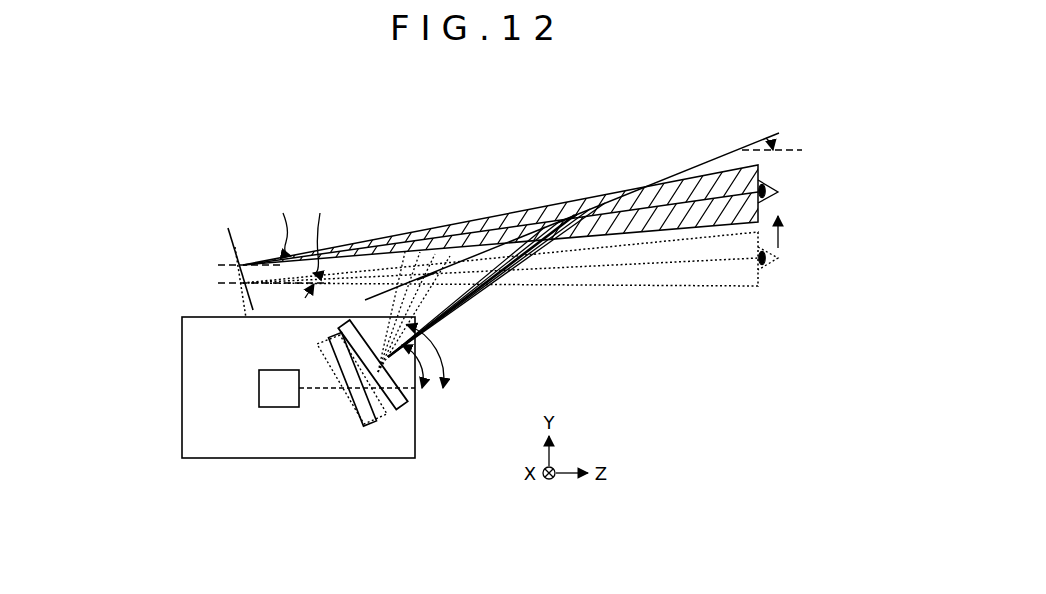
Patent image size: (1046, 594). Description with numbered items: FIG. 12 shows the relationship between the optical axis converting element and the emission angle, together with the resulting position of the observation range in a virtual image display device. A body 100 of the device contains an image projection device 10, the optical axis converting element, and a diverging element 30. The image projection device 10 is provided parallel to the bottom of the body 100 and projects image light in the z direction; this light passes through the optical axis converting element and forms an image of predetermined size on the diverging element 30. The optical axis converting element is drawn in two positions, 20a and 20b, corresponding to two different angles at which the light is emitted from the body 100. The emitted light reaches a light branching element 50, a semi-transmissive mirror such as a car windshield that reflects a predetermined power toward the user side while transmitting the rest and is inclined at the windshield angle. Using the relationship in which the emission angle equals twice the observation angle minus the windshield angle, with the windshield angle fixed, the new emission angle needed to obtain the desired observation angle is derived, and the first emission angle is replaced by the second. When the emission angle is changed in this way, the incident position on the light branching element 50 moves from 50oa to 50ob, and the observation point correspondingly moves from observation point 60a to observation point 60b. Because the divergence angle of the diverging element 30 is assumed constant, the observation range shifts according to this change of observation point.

The body 100 is at (196, 351).
The image projection device 10 is at (267, 397).
The optical axis converting element 20a is at (318, 344).
The optical axis converting element 20b is at (366, 418).
The diverging element 30 is at (404, 395).
The light branching element 50 is at (680, 172).
The incident position 50oa is at (427, 278).
The incident position 50ob is at (567, 220).
The observation point 60a is at (778, 258).
The observation point 60b is at (778, 192).